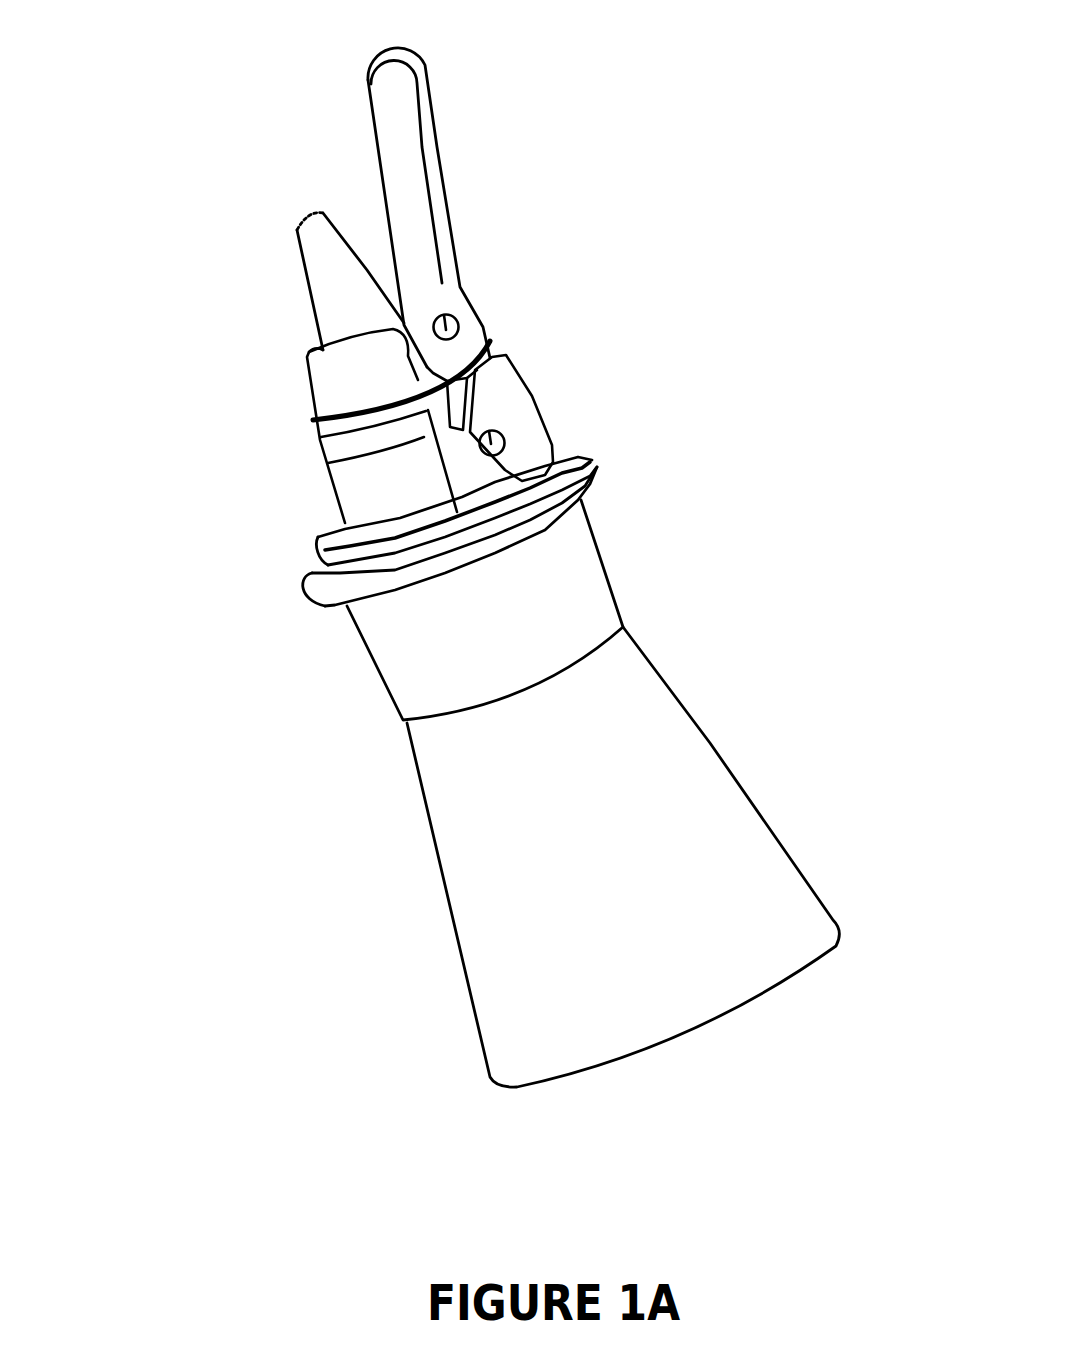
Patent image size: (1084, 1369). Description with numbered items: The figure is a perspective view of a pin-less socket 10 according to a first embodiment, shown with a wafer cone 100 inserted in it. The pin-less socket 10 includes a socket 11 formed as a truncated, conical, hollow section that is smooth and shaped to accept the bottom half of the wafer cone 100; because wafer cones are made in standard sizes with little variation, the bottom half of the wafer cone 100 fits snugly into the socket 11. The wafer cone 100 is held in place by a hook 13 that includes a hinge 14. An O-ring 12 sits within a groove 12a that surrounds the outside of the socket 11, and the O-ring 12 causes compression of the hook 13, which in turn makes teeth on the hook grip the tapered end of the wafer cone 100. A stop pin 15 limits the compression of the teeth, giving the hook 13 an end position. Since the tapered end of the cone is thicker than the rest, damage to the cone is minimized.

The pin-less socket 10 is at (735, 250).
The socket 11 is at (600, 553).
The O-ring 12 is at (315, 421).
The groove 12a is at (307, 397).
The hook 13 is at (433, 92).
The hinge 14 is at (510, 400).
The stop pin 15 is at (458, 279).
The wafer cone 100 is at (710, 742).